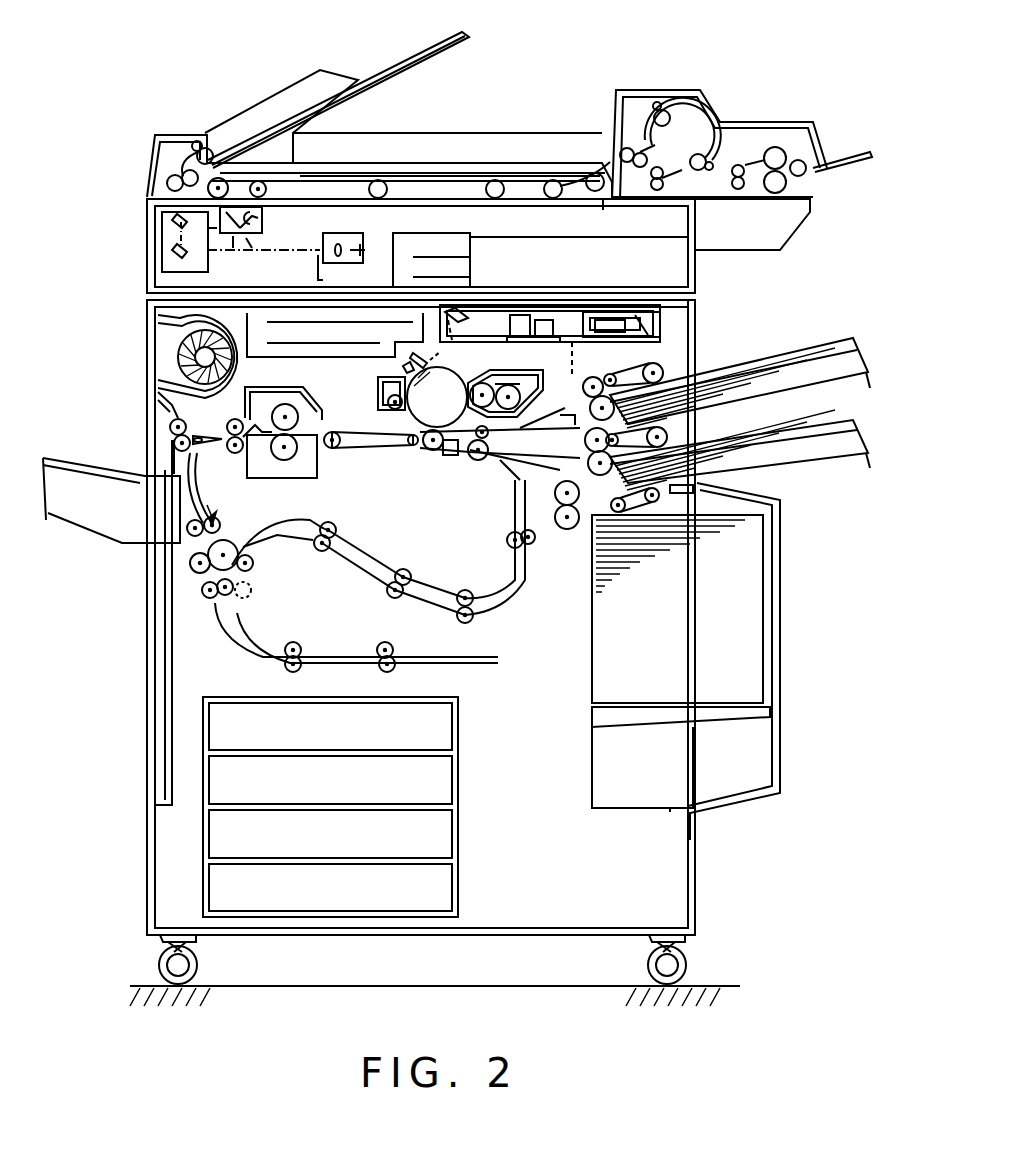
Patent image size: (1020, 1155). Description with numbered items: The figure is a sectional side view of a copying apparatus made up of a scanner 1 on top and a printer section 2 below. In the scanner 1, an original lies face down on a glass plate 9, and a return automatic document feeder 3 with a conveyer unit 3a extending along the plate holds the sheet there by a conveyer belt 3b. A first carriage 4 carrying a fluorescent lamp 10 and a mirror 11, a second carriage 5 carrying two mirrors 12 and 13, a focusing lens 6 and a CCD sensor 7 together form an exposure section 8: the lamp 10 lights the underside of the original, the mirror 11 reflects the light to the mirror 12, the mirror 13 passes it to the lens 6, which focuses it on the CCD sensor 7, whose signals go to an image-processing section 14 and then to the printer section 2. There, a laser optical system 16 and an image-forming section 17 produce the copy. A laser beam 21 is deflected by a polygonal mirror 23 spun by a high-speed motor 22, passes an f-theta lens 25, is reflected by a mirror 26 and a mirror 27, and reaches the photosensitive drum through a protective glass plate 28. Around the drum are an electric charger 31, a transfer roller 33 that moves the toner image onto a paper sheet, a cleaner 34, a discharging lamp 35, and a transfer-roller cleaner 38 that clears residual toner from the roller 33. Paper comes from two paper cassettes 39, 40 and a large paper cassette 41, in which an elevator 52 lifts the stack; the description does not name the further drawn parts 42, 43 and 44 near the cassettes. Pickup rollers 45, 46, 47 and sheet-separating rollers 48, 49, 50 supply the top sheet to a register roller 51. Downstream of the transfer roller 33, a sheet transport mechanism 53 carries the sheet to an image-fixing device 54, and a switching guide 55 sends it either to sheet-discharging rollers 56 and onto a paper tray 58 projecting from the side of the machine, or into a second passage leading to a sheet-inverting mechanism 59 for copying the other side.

The scanner 1 is at (148, 222).
The printer section 2 is at (147, 327).
The return automatic document feeder 3 is at (650, 95).
The conveyer unit 3a is at (458, 58).
The conveyer belt 3b is at (567, 167).
The first carriage 4 is at (263, 220).
The second carriage 5 is at (163, 240).
The focusing lens 6 is at (339, 244).
The CCD sensor 7 is at (402, 235).
The exposure section 8 is at (247, 250).
The glass plate 9 is at (455, 195).
The fluorescent lamp 10 is at (262, 236).
The mirror 11 is at (233, 238).
The mirror 12 is at (172, 224).
The mirror 13 is at (173, 252).
The image-processing section 14 is at (423, 287).
The laser optical system 16 is at (668, 328).
The image-forming section 17 is at (148, 610).
The laser beam 21 is at (547, 367).
The high-speed motor 22 is at (650, 338).
The polygonal mirror 23 is at (692, 305).
The f-theta lens 25 is at (538, 338).
The mirror 26 is at (448, 312).
The mirror 27 is at (487, 312).
The protective glass plate 28 is at (490, 376).
The electric charger 31 is at (455, 362).
The transfer roller 33 is at (428, 450).
The cleaner 34 is at (388, 406).
The discharging lamp 35 is at (378, 388).
The transfer-roller cleaner 38 is at (450, 458).
The paper cassette 39 is at (864, 378).
The paper cassette 40 is at (852, 462).
The large paper cassette 41 is at (780, 602).
The discharge roller pair 42 is at (688, 366).
The pickup roller 43 is at (695, 428).
The guide member 44 is at (700, 487).
The pickup roller 45 is at (604, 376).
The pickup roller 46 is at (585, 440).
The pickup roller 47 is at (514, 492).
The sheet-separating roller 48 is at (583, 393).
The sheet-separating roller 49 is at (584, 494).
The sheet-separating roller 50 is at (570, 530).
The register roller 51 is at (480, 462).
The elevator 52 is at (772, 712).
The sheet transport mechanism 53 is at (345, 450).
The image-fixing device 54 is at (312, 398).
The switching guide 55 is at (220, 438).
The sheet-discharging rollers 56 is at (158, 400).
The paper tray 58 is at (92, 520).
The sheet-inverting mechanism 59 is at (187, 650).